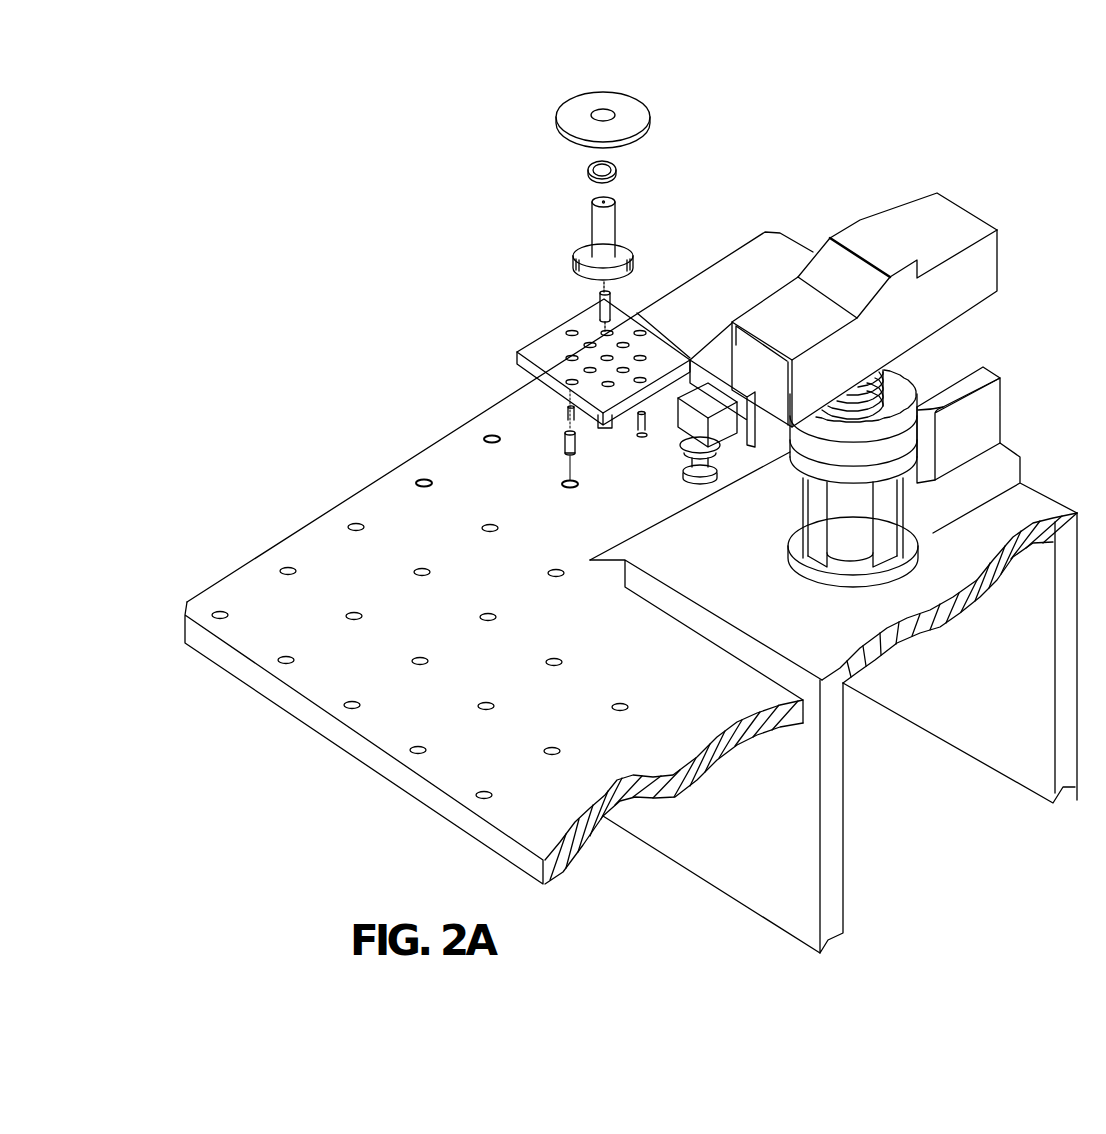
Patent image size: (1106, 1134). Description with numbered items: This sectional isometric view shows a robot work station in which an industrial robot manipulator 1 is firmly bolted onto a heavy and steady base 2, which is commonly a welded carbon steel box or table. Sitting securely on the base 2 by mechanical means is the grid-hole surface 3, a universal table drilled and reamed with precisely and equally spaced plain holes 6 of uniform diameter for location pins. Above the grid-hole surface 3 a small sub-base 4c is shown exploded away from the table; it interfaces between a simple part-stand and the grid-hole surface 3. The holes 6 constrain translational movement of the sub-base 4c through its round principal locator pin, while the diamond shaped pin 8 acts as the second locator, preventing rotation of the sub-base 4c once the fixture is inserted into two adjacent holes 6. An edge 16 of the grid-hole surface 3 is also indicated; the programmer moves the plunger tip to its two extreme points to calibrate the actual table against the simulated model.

The manipulator 1 is at (957, 223).
The base 2 is at (848, 617).
The grid-hole surface 3 is at (545, 783).
The sub-base 4c is at (660, 343).
The holes 6 is at (563, 485).
The diamond shaped pin 8 is at (585, 426).
The edge 16 is at (308, 707).